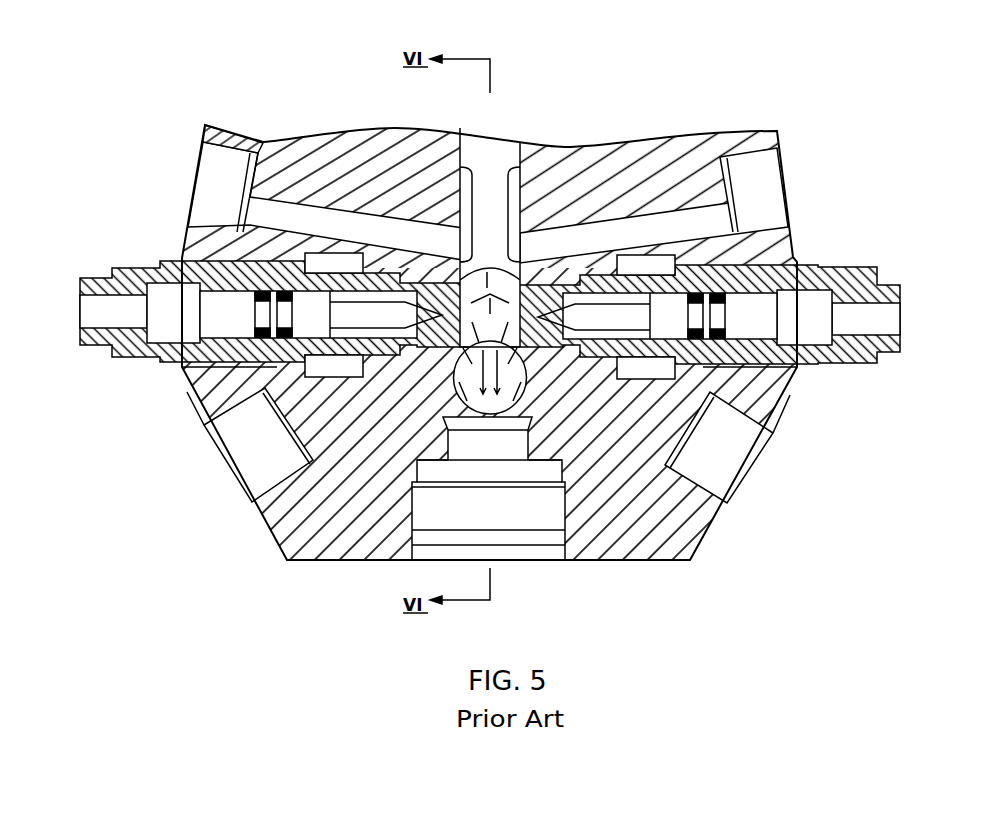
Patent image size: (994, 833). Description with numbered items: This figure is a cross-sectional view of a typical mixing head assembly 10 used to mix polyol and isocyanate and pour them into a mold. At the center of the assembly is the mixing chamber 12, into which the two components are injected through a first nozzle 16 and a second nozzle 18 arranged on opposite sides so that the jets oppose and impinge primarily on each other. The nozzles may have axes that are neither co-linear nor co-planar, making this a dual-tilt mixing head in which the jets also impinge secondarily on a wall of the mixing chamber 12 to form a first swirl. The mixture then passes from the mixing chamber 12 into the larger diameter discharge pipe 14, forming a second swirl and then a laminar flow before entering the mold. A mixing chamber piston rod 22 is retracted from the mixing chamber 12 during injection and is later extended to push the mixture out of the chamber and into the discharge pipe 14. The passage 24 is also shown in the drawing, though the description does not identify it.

The mixing head assembly 10 is at (732, 82).
The mixing chamber 12 is at (521, 390).
The discharge pipe 14 is at (456, 386).
The first nozzle 16 is at (531, 292).
The second nozzle 18 is at (445, 280).
The mixing chamber piston rod 22 is at (487, 138).
The central flow passage 24 is at (489, 240).